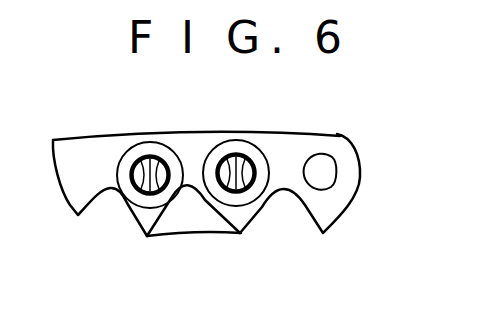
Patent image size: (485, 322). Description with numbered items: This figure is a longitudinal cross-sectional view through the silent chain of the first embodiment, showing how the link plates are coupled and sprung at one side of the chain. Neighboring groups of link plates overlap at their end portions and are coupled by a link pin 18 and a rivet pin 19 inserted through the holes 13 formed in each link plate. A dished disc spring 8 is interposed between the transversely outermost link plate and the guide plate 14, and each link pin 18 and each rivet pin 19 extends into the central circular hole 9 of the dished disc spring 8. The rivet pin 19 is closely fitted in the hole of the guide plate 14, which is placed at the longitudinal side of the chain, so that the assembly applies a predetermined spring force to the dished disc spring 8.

The dished disc spring 8 is at (122, 173).
The central circular hole 9 is at (125, 200).
The hole 13 is at (334, 157).
The guide plate 14 is at (193, 212).
The link pin 18 is at (155, 160).
The rivet pin 19 is at (139, 150).